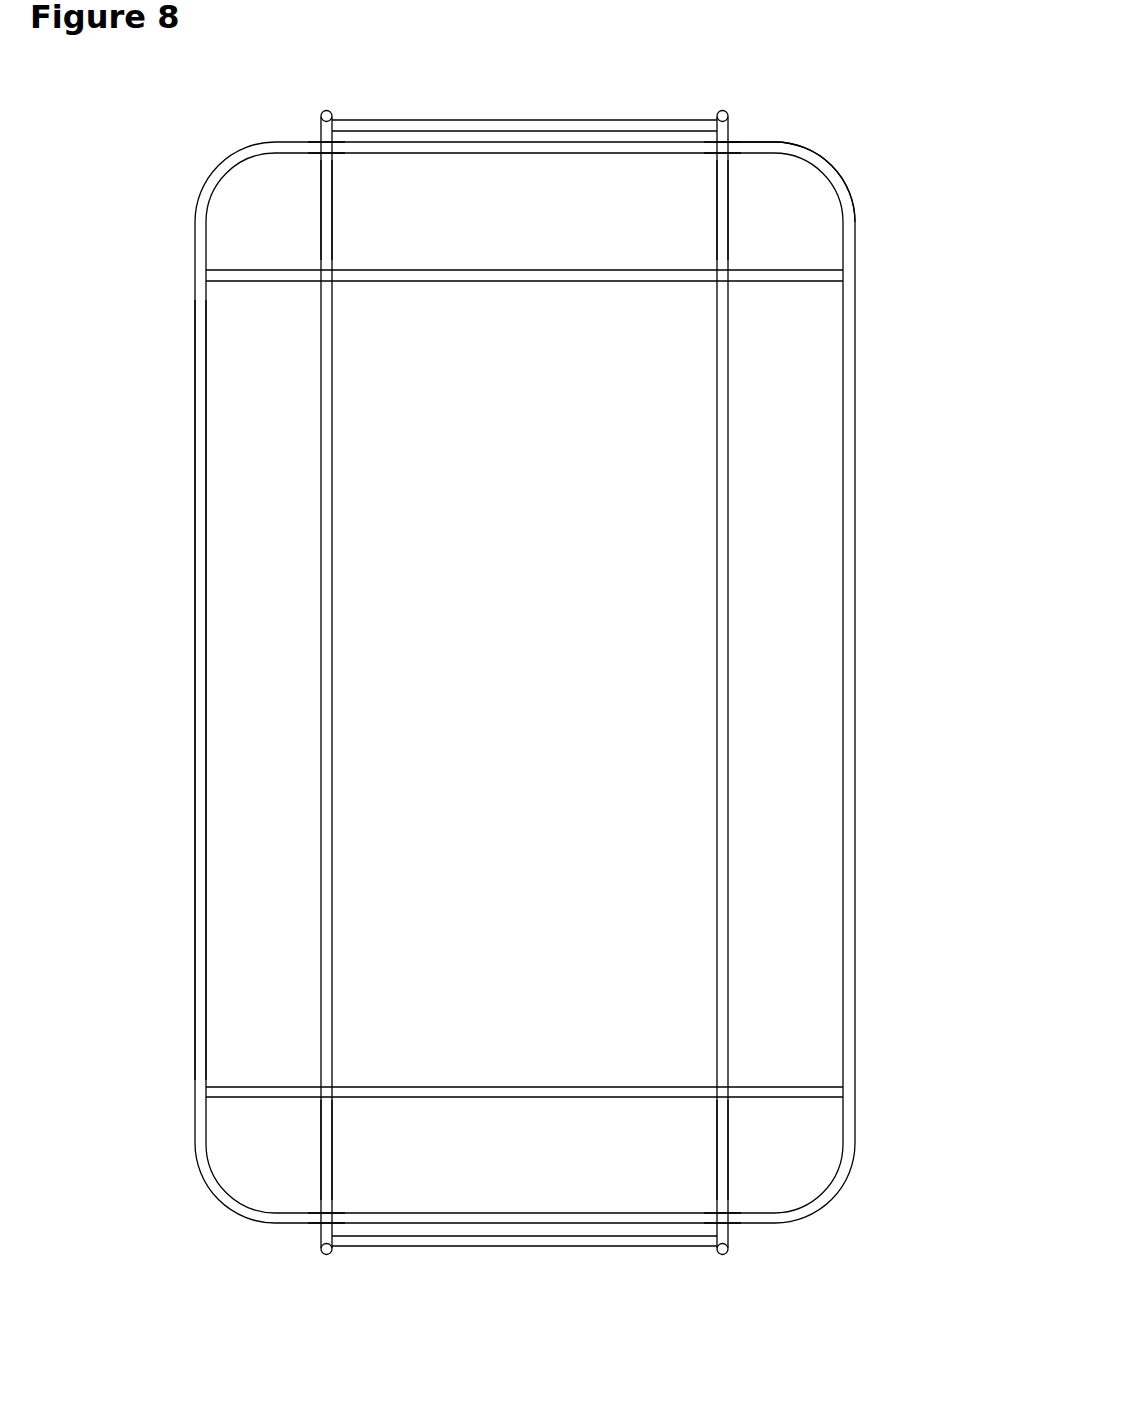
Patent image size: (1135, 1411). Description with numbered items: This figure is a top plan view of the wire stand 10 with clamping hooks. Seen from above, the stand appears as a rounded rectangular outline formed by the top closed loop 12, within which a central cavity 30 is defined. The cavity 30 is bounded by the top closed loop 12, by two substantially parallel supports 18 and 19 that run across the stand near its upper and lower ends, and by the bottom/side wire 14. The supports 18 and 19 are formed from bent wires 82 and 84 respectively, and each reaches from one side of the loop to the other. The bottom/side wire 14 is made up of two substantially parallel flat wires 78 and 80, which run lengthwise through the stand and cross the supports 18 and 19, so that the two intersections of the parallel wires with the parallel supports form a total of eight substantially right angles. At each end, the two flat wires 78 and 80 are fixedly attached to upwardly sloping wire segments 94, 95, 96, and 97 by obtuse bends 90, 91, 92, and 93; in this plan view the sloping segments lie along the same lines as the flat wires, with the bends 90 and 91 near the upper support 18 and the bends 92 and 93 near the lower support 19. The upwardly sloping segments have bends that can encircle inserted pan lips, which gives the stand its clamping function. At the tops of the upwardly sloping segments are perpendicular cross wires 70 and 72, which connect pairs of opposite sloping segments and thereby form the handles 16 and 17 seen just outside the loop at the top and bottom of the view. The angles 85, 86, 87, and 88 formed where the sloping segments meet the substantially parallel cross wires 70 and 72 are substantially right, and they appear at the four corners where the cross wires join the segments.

The wire stand 10 is at (853, 212).
The top closed loop 12 is at (820, 160).
The bottom/side wire 14 is at (724, 820).
The handle 16 is at (555, 120).
The handle 17 is at (530, 1238).
The substantially parallel support 18 is at (824, 273).
The substantially parallel support 19 is at (818, 1090).
The cavity 30 is at (270, 458).
The perpendicular cross wire 70 is at (400, 120).
The perpendicular cross wire 72 is at (450, 1247).
The substantially parallel flat wire 78 is at (325, 390).
The substantially parallel flat wire 80 is at (733, 400).
The bent wire 82 is at (238, 268).
The bent wire 84 is at (232, 1088).
The angle 85 is at (322, 113).
The angle 86 is at (727, 118).
The angle 87 is at (325, 1252).
The angle 88 is at (725, 1252).
The obtuse bend 90 is at (320, 202).
The obtuse bend 91 is at (728, 195).
The obtuse bend 92 is at (325, 1158).
The obtuse bend 93 is at (725, 1165).
The upwardly sloping wire segment 94 is at (322, 170).
The upwardly sloping wire segment 95 is at (733, 143).
The upwardly sloping wire segment 96 is at (322, 1200).
The upwardly sloping wire segment 97 is at (728, 1205).